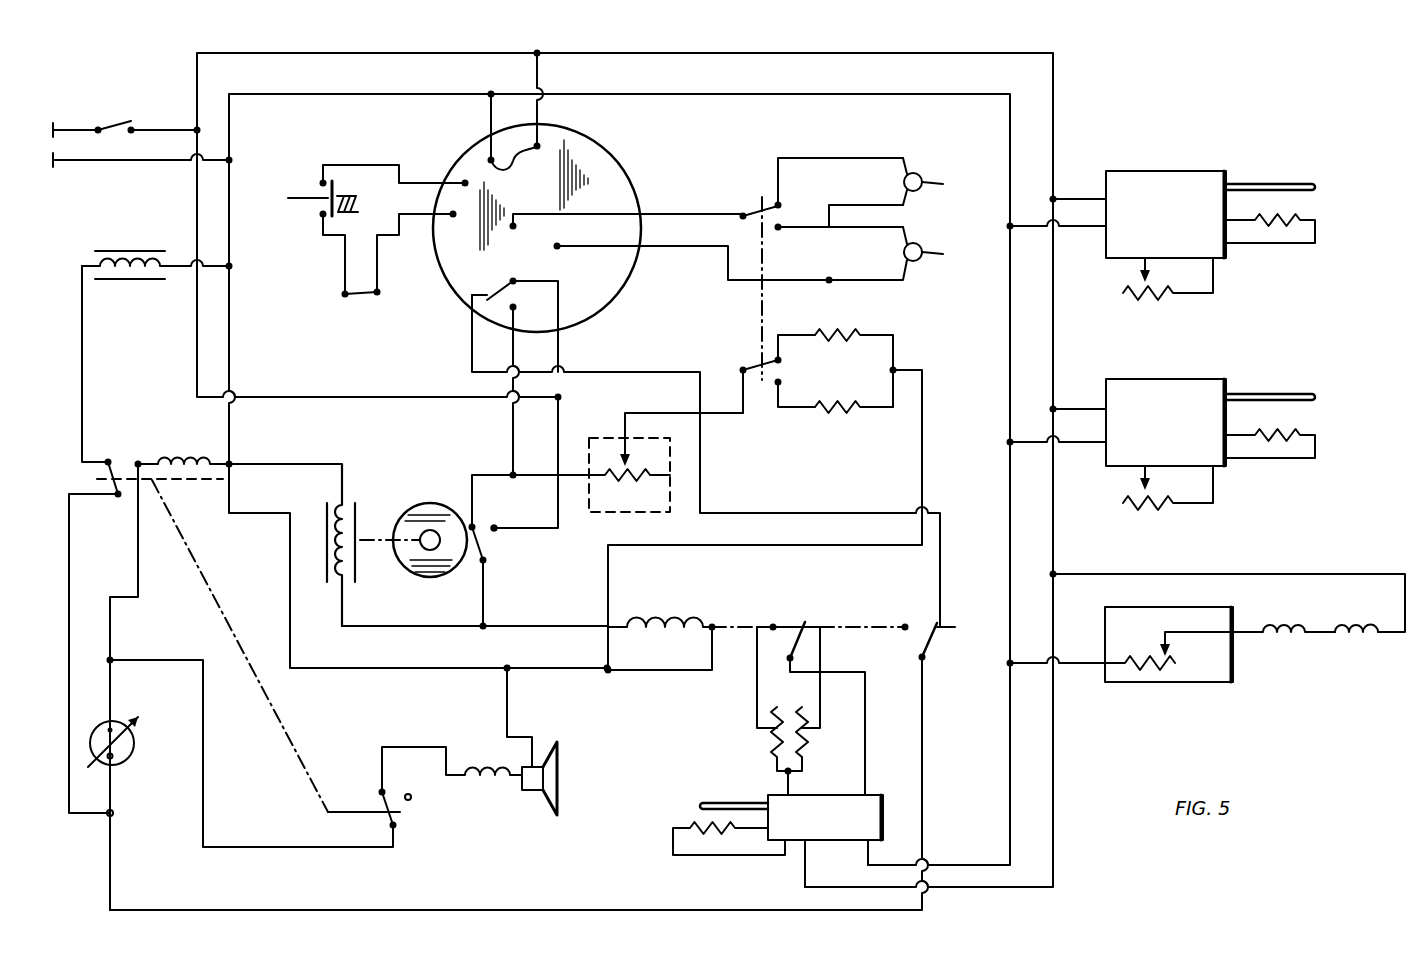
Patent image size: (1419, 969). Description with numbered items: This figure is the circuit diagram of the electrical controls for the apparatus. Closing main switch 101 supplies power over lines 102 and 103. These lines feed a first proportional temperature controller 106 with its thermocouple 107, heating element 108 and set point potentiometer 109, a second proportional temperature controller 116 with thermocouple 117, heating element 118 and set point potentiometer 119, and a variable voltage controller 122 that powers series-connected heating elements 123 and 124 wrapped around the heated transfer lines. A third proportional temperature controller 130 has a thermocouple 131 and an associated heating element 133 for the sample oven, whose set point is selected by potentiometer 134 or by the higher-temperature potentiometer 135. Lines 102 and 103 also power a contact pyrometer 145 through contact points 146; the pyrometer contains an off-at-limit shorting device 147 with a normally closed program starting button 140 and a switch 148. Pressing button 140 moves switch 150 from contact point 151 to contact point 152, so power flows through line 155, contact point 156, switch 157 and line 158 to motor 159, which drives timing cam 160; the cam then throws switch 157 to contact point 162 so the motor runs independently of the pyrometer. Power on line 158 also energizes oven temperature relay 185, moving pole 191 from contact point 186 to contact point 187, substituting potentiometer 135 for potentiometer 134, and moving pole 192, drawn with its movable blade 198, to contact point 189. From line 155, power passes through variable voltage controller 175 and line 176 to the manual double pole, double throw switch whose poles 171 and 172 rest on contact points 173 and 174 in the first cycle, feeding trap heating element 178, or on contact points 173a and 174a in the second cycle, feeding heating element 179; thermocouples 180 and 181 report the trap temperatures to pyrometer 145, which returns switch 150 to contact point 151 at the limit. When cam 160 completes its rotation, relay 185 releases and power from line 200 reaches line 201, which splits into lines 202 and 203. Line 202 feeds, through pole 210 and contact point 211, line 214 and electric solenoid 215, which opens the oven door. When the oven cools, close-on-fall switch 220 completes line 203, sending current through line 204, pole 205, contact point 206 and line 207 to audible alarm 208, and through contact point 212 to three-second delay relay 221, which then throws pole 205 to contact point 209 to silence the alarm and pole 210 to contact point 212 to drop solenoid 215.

The main switch 101 is at (120, 128).
The line 102 is at (284, 53).
The line 103 is at (345, 95).
The first proportional temperature controller 106 is at (1150, 170).
The thermocouple 107 is at (1285, 180).
The electrical heating element 108 is at (1318, 228).
The set point potentiometer 109 is at (1218, 292).
The second proportional temperature controller 116 is at (1180, 378).
The thermocouple 117 is at (1285, 390).
The electrical heating element 118 is at (1320, 441).
The second set point potentiometer 119 is at (1212, 496).
The variable voltage controller 122 is at (1210, 684).
The heating element 123 is at (1298, 640).
The heating element 124 is at (1362, 640).
The third proportional temperature controller 130 is at (885, 797).
The thermocouple 131 is at (716, 800).
The sensor resistor 133 is at (704, 856).
The set point potentiometer 134 is at (808, 741).
The second set point potentiometer 135 is at (775, 737).
The program starting button 140 is at (307, 206).
The contact pyrometer 145 is at (625, 160).
The contact points 146 is at (516, 165).
The off at limit shorting device 147 is at (377, 166).
The switch 148 is at (363, 300).
The switch 150 is at (502, 280).
The contact point 151 is at (487, 296).
The contact point 152 is at (530, 307).
The line 155 is at (516, 356).
The contact point 156 is at (474, 520).
The switch 157 is at (486, 558).
The line 158 is at (485, 606).
The motor 159 is at (345, 503).
The timing cam 160 is at (410, 580).
The contact point 162 is at (497, 527).
The pole 171 is at (745, 210).
The pole 172 is at (743, 366).
The contact 173 is at (785, 200).
The contact point 173a is at (786, 224).
The contact 174 is at (782, 354).
The contact point 174a is at (784, 384).
The variable voltage controller 175 is at (658, 512).
The line 176 is at (672, 413).
The heating element 178 is at (880, 335).
The heating element 179 is at (870, 410).
The thermocouple 180 is at (942, 181).
The thermocouple 181 is at (904, 255).
The oven temperature relay 185 is at (665, 625).
The contact point 186 is at (803, 622).
The contact point 187 is at (772, 622).
The contact point 189 is at (907, 624).
The pole 191 is at (786, 643).
The pole 192 is at (926, 656).
The switch blade 198 is at (942, 625).
The line 200 is at (472, 347).
The line 201 is at (112, 877).
The line 202 is at (69, 615).
The line 203 is at (138, 538).
The line 204 is at (205, 800).
The pole 205 is at (397, 832).
The contact point 206 is at (380, 788).
The line 207 is at (438, 745).
The audible alarm 208 is at (560, 768).
The contact point 209 is at (412, 801).
The pole 210 is at (97, 479).
The contact point 211 is at (108, 458).
The contact point 212 is at (138, 460).
The line 214 is at (82, 330).
The electric solenoid 215 is at (157, 240).
The close on fall of temperature switch 220 is at (132, 736).
The three-second delay relay 221 is at (185, 462).